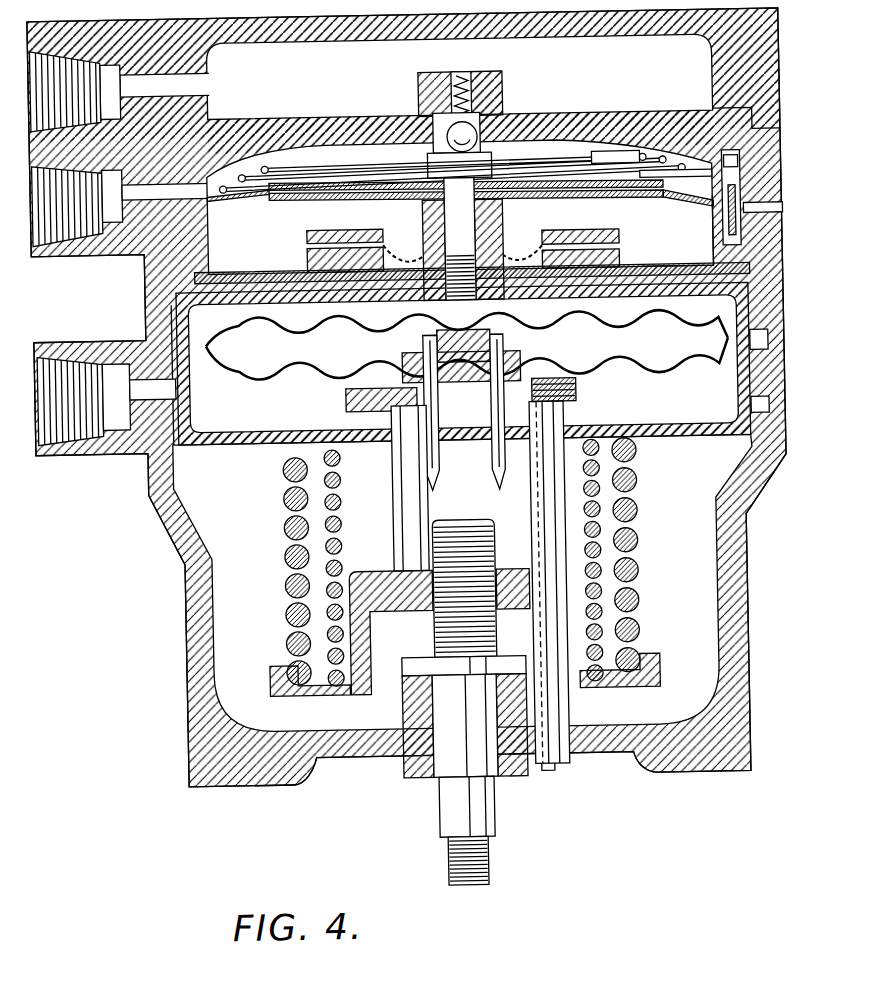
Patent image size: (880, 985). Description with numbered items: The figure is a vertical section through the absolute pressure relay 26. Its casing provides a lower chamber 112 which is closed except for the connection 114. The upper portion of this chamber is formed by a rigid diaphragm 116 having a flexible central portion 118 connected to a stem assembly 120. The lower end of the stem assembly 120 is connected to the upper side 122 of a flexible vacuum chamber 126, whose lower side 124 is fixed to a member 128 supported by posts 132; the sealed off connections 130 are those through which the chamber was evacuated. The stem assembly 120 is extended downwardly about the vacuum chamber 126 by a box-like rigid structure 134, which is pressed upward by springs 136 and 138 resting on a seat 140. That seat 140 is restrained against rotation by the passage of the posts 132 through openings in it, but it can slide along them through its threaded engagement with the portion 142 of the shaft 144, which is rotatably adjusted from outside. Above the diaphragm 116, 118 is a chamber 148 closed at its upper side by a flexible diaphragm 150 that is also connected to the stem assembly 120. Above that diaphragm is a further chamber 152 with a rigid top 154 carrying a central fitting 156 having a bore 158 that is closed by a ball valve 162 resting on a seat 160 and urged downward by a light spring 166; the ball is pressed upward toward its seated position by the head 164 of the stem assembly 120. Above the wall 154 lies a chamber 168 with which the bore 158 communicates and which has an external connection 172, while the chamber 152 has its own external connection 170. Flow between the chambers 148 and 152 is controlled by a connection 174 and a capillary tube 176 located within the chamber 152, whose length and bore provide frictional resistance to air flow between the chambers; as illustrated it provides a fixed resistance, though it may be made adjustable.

The absolute pressure relay 26 is at (170, 567).
The lower chamber 112 is at (699, 617).
The connection 114 is at (93, 428).
The rigid diaphragm 116 is at (242, 273).
The flexible central portion 118 is at (506, 248).
The stem assembly 120 is at (451, 213).
The upper side of vacuum chamber 122 is at (336, 317).
The lower side of vacuum chamber 124 is at (333, 373).
The flexible vacuum chamber 126 is at (677, 349).
The member 128 is at (573, 397).
The sealed off connections 130 is at (436, 462).
The posts 132 is at (392, 492).
The box-like rigid structure 134 is at (659, 434).
The spring 136 is at (285, 527).
The spring 138 is at (597, 570).
The seat 140 is at (268, 663).
The threaded portion of shaft 142 is at (488, 534).
The shaft 144 is at (472, 806).
The chamber 148 is at (690, 251).
The flexible diaphragm 150 is at (687, 194).
The chamber 152 is at (338, 155).
The rigid top 154 is at (575, 122).
The central fitting 156 is at (433, 87).
The bore 158 is at (459, 72).
The seat 160 is at (492, 118).
The ball valve 162 is at (443, 123).
The head of stem assembly 164 is at (500, 158).
The light spring 166 is at (506, 78).
The chamber 168 is at (686, 76).
The external connection 170 is at (91, 213).
The external connection 172 is at (179, 83).
The connection 174 is at (764, 206).
The capillary tube 176 is at (615, 160).